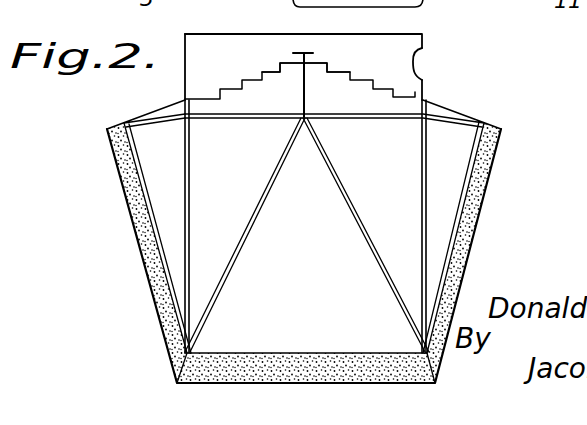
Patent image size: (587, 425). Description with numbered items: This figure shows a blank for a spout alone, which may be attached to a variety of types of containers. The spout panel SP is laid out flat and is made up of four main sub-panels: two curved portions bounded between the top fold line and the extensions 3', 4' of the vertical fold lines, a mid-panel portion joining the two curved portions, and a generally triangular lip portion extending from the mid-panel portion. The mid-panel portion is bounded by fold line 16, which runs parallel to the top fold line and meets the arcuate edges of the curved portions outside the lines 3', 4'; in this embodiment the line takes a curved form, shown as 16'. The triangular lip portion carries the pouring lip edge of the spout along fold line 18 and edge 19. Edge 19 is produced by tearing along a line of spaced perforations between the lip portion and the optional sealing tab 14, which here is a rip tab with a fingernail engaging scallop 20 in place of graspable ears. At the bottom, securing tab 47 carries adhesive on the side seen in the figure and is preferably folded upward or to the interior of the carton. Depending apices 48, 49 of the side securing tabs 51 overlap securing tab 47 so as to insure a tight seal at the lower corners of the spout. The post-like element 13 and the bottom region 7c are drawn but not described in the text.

The central post 13 is at (313, 57).
The sealing tab 14 is at (398, 40).
The fold line 16 is at (303, 136).
The curved fold line 16' is at (304, 135).
The fold line 18 is at (285, 70).
The edge 19 is at (223, 90).
The fingernail engaging scallop 20 is at (415, 63).
The extension of vertical fold line 3' is at (207, 226).
The extension of vertical fold line 4' is at (394, 226).
The bottom plate 7c is at (323, 353).
The securing tab 47 is at (205, 372).
The depending apex 48 is at (437, 363).
The depending apex 49 is at (175, 367).
The side securing tabs 51 is at (121, 168).
The spout panel SP is at (468, 100).